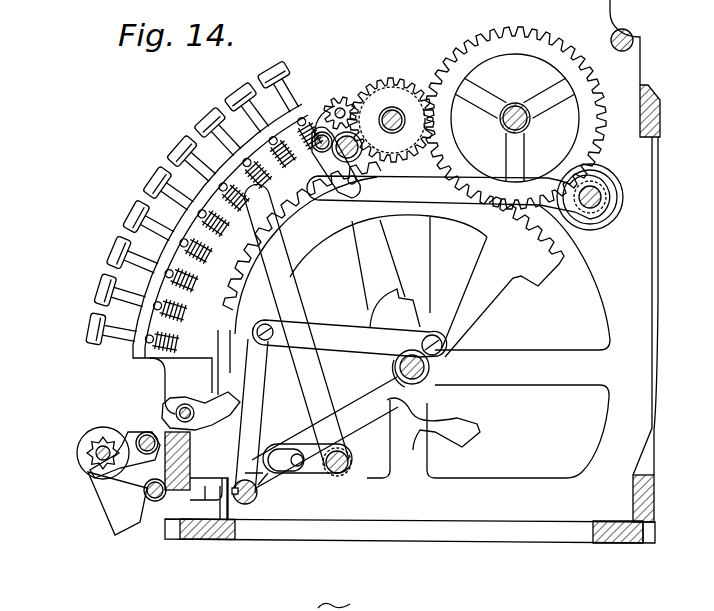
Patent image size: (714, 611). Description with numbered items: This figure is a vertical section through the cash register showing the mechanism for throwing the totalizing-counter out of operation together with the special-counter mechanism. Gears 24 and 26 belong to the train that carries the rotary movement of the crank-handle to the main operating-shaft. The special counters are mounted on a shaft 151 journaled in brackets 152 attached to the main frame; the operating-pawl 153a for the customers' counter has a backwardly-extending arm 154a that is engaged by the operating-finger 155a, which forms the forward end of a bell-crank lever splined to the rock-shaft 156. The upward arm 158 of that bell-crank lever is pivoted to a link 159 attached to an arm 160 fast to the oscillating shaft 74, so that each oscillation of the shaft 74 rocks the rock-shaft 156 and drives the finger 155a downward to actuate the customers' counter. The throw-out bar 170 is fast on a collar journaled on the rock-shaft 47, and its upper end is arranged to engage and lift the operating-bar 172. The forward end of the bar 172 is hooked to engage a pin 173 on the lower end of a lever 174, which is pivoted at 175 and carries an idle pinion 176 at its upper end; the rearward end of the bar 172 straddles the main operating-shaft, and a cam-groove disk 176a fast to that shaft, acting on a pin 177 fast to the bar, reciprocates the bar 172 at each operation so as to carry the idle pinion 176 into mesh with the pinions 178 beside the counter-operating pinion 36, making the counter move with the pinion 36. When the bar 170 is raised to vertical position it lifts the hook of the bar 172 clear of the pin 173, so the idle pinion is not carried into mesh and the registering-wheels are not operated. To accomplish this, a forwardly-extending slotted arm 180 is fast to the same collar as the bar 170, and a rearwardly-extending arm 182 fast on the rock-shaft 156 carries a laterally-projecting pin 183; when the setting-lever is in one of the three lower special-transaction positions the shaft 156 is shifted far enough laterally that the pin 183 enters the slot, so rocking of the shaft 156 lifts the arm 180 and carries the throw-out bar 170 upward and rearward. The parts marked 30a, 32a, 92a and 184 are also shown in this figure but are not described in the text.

The gear 24 is at (209, 108).
The counter-operating pinion 36 is at (385, 81).
The pivot 175 is at (363, 198).
The idle pinion 176 is at (339, 99).
The pinions 178 is at (422, 69).
The lever 174 is at (361, 162).
The operating-bar 172 is at (458, 197).
The pin 177 is at (565, 190).
The cam-groove disk 176a is at (607, 164).
The gear 26 is at (603, 214).
The pin 173 is at (306, 223).
The throw-out bar 170 is at (290, 297).
The toothed segment 30a is at (458, 277).
The segment piece 32a is at (395, 308).
The link 159 is at (349, 338).
The oscillating shaft 74 is at (396, 368).
The arm 160 is at (438, 368).
The brackets 152 is at (133, 440).
The shaft 151 is at (96, 452).
The operating-pawl 153a is at (98, 484).
The upward arm 158 is at (197, 418).
The operating-finger 155a is at (208, 478).
The backwardly-extending arm 154a is at (194, 492).
The slot 184 is at (280, 447).
The link 92a is at (343, 398).
The forwardly-extending arm 180 is at (352, 464).
The rock-shaft 47 is at (346, 470).
The pin 183 is at (300, 468).
The rearwardly-extending arm 182 is at (270, 481).
The rock-shaft 156 is at (245, 504).